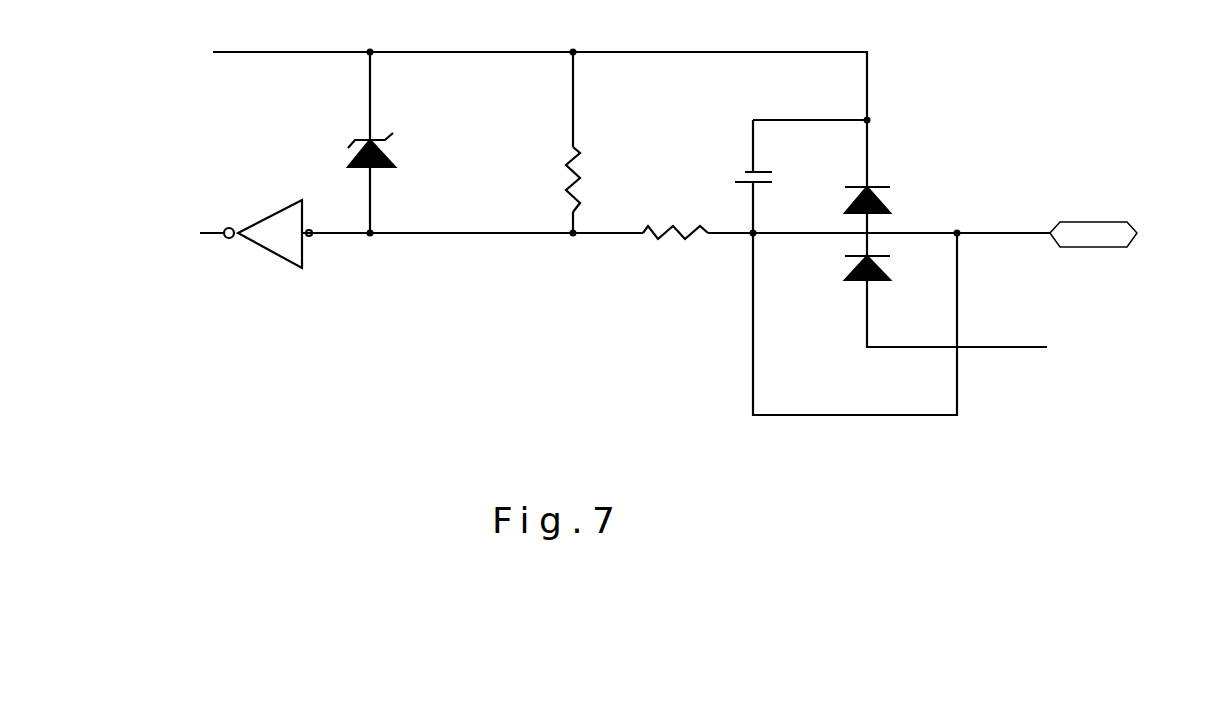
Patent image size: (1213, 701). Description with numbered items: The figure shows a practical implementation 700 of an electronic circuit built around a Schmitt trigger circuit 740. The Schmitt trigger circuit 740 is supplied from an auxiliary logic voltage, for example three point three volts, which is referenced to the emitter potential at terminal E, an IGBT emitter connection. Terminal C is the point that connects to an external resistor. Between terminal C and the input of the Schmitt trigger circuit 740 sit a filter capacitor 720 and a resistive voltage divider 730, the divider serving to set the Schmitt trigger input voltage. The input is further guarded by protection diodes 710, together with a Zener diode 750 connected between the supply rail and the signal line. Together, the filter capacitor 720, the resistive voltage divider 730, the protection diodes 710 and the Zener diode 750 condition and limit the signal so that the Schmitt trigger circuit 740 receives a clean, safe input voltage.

The practical implementation 700 is at (668, 215).
The protection diodes 710 is at (917, 223).
The filter capacitor 720 is at (712, 157).
The resistive voltage divider 730 is at (589, 221).
The Schmitt trigger circuit 740 is at (267, 258).
The Zener diode 750 is at (412, 139).